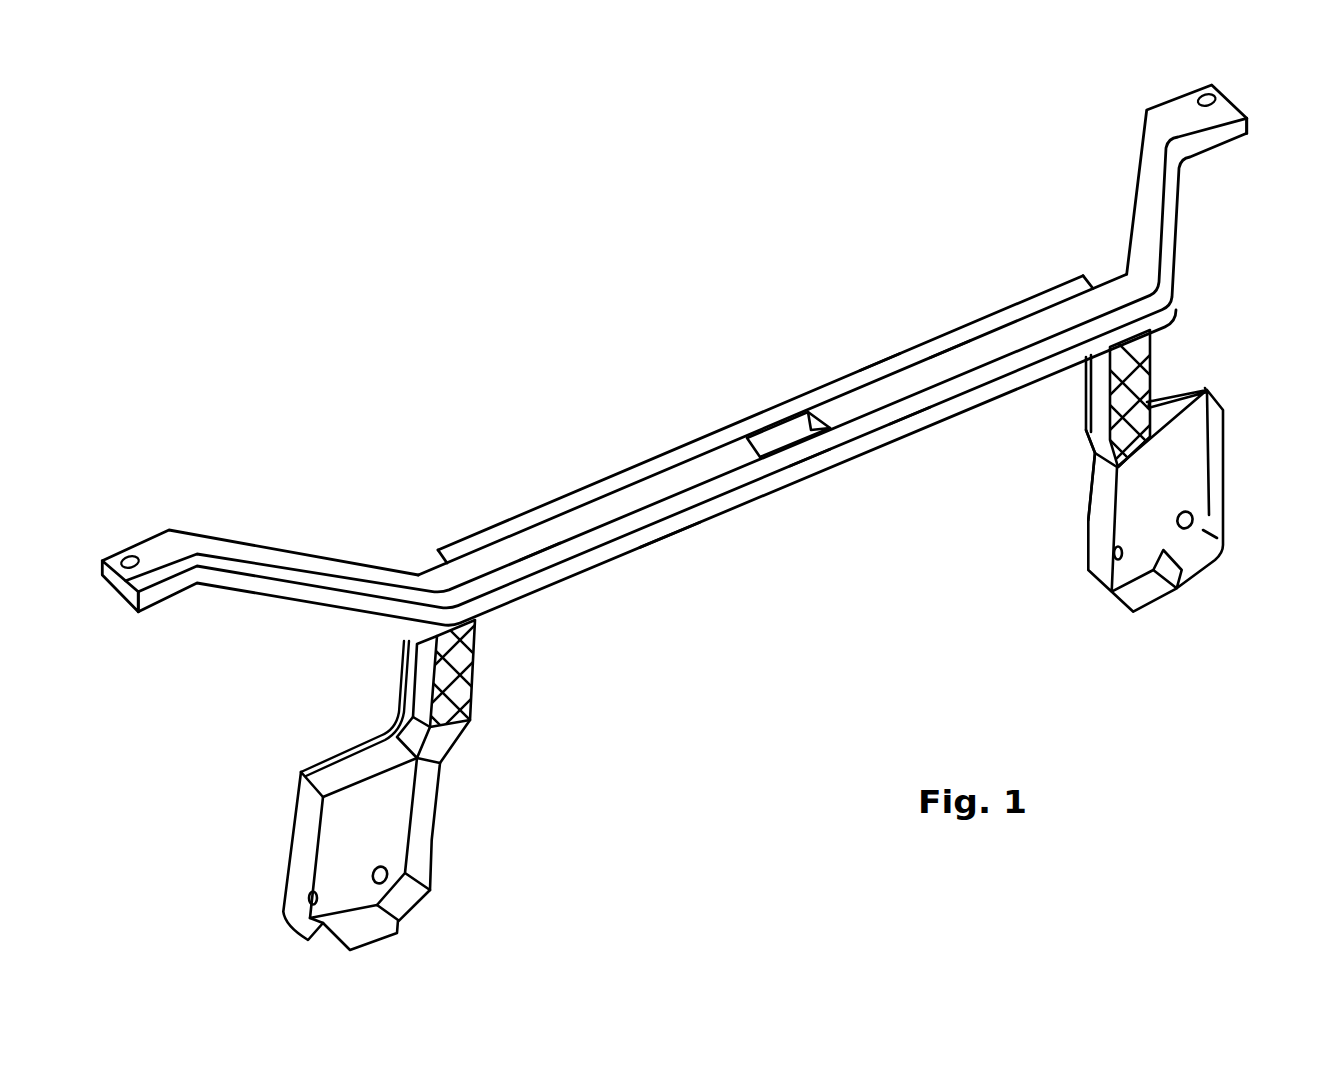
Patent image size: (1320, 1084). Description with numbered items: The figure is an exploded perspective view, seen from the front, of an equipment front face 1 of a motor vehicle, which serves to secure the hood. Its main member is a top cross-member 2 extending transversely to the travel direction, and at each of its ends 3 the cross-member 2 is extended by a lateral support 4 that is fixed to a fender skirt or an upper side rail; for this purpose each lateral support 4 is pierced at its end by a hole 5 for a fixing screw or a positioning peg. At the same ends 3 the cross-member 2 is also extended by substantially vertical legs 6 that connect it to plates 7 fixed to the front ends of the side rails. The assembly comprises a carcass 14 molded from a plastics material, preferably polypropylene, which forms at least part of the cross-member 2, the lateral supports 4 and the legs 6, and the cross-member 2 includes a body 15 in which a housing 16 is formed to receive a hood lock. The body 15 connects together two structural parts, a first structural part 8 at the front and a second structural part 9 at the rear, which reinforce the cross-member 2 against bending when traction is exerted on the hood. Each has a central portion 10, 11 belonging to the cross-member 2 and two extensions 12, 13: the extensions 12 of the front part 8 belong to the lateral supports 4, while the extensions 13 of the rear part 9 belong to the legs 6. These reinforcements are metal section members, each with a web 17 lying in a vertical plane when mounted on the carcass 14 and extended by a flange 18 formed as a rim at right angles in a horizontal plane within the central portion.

The equipment front face 1 is at (772, 601).
The top cross-member 2 is at (626, 485).
The end 3 is at (425, 568).
The lateral support 4 is at (310, 563).
The hole 5 is at (129, 556).
The leg 6 is at (457, 650).
The plate 7 is at (385, 818).
The first structural part 8 is at (803, 480).
The second structural part 9 is at (875, 375).
The central portion 10 is at (663, 540).
The central portion 11 is at (683, 450).
The extension 12 is at (282, 590).
The extension 13 is at (397, 647).
The carcass 14 is at (1088, 470).
The body 15 is at (948, 368).
The housing 16 is at (786, 443).
The web 17 is at (905, 432).
The flange 18 is at (540, 566).